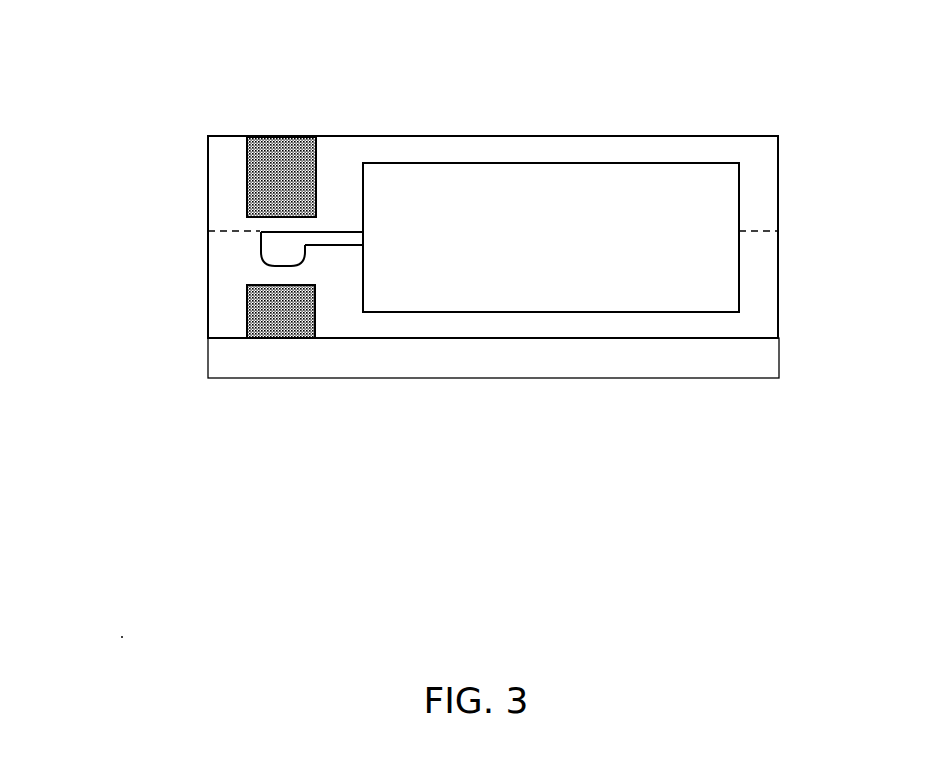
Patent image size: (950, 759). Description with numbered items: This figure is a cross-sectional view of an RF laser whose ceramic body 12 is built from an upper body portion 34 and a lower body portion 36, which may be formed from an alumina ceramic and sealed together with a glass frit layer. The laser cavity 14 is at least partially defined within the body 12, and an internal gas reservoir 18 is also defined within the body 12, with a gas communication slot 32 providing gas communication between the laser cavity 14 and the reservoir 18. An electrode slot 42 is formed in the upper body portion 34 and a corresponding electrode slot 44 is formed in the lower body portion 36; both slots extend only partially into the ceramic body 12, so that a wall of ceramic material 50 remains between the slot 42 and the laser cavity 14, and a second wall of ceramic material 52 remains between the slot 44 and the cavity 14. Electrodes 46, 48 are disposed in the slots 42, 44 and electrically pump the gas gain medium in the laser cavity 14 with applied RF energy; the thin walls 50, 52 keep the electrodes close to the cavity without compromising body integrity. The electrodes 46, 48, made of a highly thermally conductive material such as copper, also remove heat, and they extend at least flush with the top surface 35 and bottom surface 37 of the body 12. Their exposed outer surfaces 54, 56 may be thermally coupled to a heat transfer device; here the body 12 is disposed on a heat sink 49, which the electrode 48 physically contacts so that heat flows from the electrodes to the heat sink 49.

The body 12 is at (771, 102).
The laser cavity 14 is at (260, 250).
The internal gas reservoir 18 is at (617, 177).
The gas communication slot 32 is at (332, 237).
The upper body portion 34 is at (779, 178).
The top surface 35 is at (487, 136).
The lower body portion 36 is at (779, 273).
The bottom surface 37 is at (583, 338).
The electrode slot 42 is at (315, 177).
The electrode slot 44 is at (248, 323).
The electrode 46 is at (262, 168).
The electrode 48 is at (287, 325).
The heat sink 49 is at (727, 378).
The wall of ceramic material 50 is at (260, 223).
The wall of ceramic material 52 is at (260, 274).
The exposed outer surface 54 is at (290, 168).
The exposed outer surface 56 is at (272, 338).